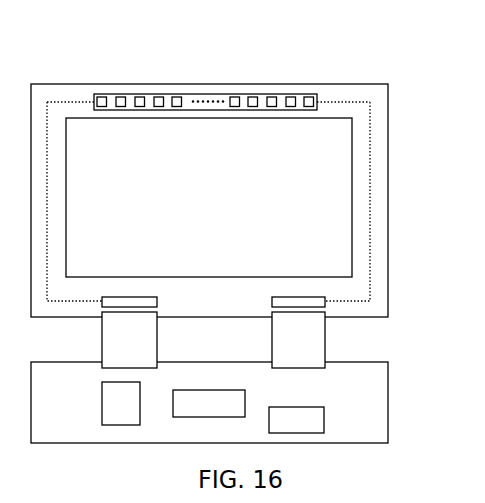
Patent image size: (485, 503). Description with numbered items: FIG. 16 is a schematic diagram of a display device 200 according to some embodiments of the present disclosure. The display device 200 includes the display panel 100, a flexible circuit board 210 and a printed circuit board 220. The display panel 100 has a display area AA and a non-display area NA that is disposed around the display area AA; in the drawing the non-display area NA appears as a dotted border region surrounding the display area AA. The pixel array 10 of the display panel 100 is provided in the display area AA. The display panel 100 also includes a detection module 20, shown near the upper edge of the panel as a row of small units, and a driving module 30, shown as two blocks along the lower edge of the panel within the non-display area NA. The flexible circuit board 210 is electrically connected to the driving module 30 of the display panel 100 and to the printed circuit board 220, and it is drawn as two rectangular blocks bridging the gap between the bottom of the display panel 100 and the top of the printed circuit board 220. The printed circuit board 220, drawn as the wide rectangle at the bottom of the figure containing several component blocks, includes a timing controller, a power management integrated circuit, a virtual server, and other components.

The display device 200 is at (91, 60).
The display panel 100 is at (186, 84).
The detection module 20 is at (282, 92).
The pixel array 10 is at (333, 128).
The driving module 30 is at (318, 302).
The flexible circuit board 210 is at (325, 350).
The printed circuit board 220 is at (388, 411).
The non-display area NA is at (376, 187).
The display area AA is at (209, 197).